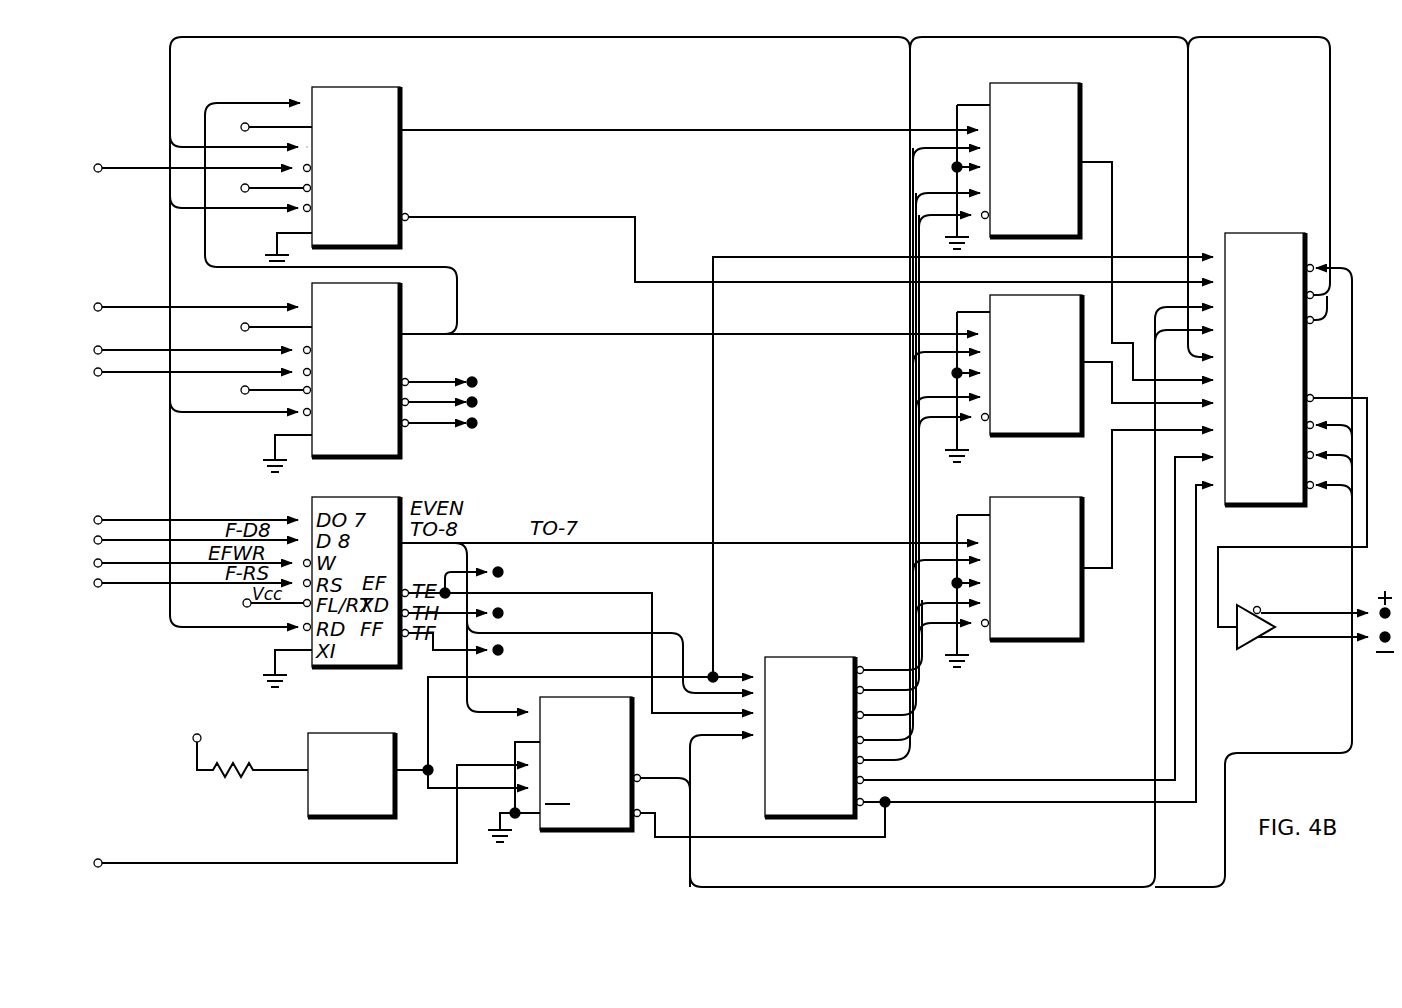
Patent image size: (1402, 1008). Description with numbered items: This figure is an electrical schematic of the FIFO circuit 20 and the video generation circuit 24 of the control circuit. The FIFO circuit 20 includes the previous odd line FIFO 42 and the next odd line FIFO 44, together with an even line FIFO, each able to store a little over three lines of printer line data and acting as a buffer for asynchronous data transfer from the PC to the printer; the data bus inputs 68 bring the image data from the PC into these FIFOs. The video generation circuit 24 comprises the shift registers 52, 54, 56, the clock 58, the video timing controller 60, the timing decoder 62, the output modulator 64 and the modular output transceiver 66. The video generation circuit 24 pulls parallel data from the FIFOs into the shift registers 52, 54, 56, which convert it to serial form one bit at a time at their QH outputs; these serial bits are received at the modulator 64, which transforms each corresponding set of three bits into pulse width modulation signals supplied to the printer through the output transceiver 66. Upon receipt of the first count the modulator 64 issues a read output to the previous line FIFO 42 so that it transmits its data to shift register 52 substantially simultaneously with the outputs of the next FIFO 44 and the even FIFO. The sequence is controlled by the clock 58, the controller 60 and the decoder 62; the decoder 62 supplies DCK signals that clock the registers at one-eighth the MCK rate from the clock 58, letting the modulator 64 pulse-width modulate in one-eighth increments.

The FIFO circuit 20 is at (478, 78).
The video generation circuit 24 is at (825, 238).
The previous odd line FIFO 42 is at (400, 85).
The next odd line FIFO 44 is at (400, 300).
The shift register 52 is at (1080, 112).
The shift register 54 is at (1045, 295).
The shift register 56 is at (1050, 497).
The clock 58 is at (325, 817).
The video timing controller 60 is at (535, 720).
The timing decoder 62 is at (832, 657).
The output modulator 64 is at (1283, 233).
The modular output transceiver 66 is at (1250, 645).
The data bus inputs 68 is at (142, 307).